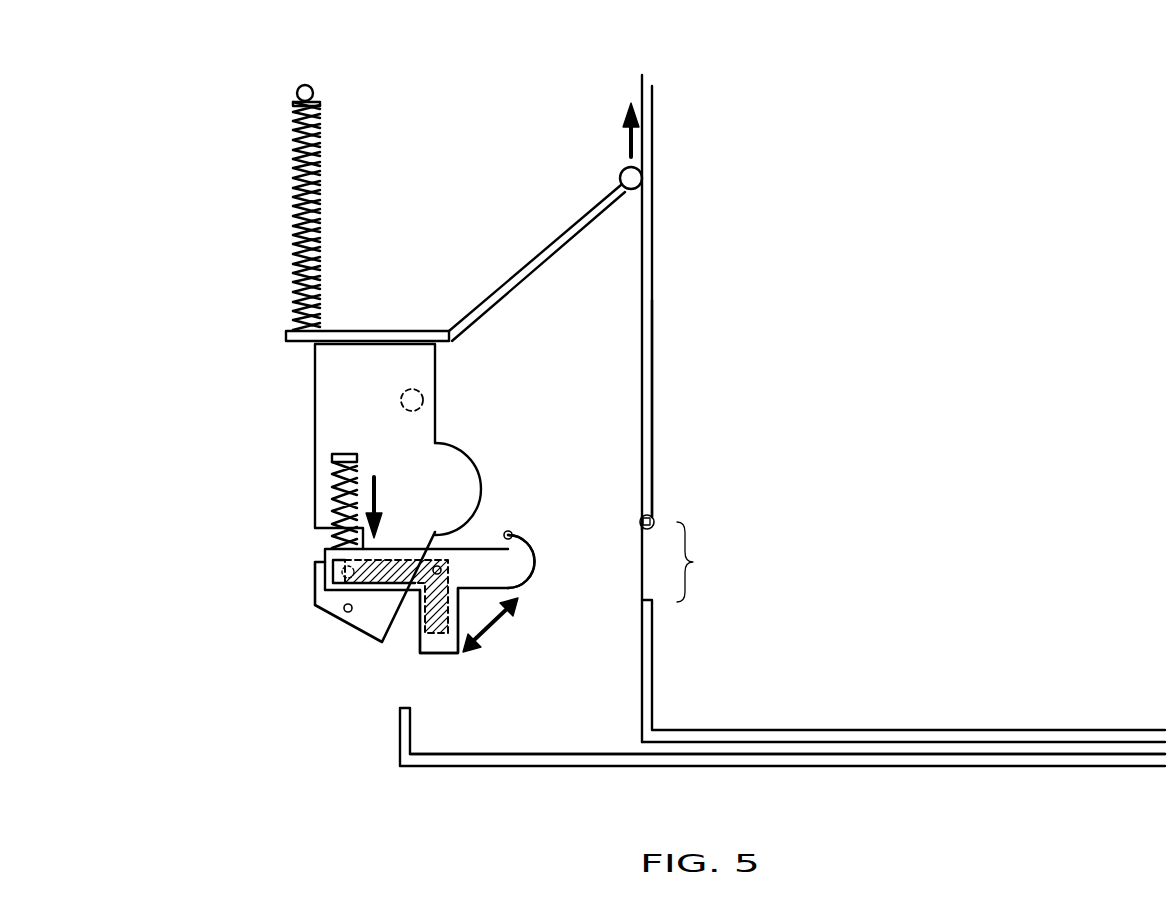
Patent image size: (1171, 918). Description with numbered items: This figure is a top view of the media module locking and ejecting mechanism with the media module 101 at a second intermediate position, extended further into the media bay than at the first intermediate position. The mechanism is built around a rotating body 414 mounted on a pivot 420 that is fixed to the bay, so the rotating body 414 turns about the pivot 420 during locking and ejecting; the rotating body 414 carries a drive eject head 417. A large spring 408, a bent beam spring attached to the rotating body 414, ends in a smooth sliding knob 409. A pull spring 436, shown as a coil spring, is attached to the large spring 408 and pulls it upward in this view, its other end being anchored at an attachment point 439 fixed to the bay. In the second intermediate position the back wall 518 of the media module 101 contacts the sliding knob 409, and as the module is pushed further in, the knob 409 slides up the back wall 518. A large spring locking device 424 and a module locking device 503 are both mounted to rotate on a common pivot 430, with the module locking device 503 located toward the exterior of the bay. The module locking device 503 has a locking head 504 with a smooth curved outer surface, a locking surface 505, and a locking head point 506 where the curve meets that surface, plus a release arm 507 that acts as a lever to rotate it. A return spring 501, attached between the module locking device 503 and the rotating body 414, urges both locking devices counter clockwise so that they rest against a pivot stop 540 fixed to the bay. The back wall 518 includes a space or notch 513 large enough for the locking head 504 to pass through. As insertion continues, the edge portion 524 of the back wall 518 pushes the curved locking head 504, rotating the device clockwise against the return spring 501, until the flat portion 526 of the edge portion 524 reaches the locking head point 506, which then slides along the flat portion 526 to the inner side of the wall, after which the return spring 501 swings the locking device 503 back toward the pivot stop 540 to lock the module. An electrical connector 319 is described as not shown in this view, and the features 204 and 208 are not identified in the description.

The media module 101 is at (654, 648).
The guide rail 204 is at (910, 768).
The rail 208 is at (1076, 729).
The electrical connector 319 is at (655, 437).
The large spring 408 is at (510, 286).
The sliding knob 409 is at (620, 178).
The rotating body 414 is at (315, 436).
The drive eject head 417 is at (482, 472).
The pivot 420 is at (424, 400).
The large spring locking device 424 is at (403, 558).
The pivot 430 is at (432, 576).
The pull spring 436 is at (292, 136).
The attachment point 439 is at (302, 86).
The return spring 501 is at (333, 516).
The module locking device 503 is at (516, 606).
The locking head 504 is at (535, 565).
The locking surface 505 is at (507, 531).
The locking head point 506 is at (513, 534).
The release arm 507 is at (422, 648).
The space or notch 513 is at (708, 562).
The back wall 518 is at (655, 221).
The edge portion 524 is at (652, 516).
The flat portion 526 is at (645, 527).
The pivot stop 540 is at (345, 611).